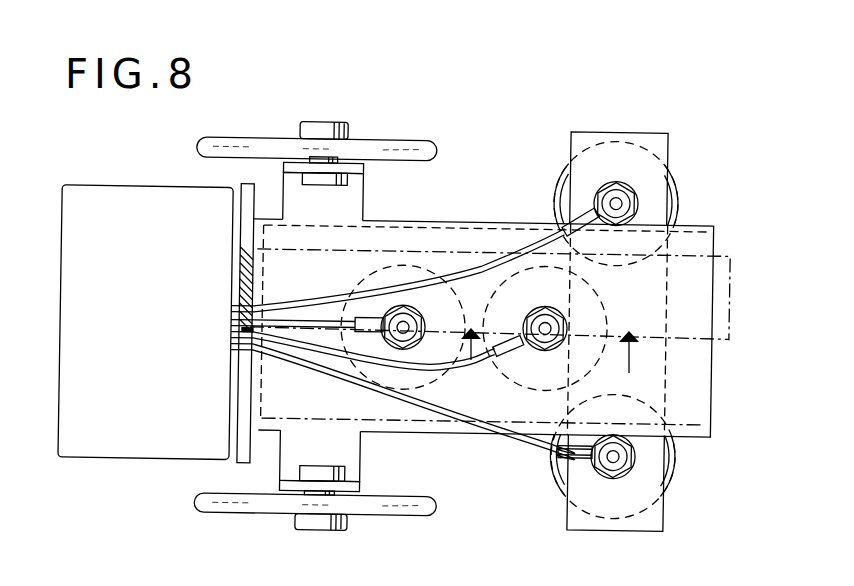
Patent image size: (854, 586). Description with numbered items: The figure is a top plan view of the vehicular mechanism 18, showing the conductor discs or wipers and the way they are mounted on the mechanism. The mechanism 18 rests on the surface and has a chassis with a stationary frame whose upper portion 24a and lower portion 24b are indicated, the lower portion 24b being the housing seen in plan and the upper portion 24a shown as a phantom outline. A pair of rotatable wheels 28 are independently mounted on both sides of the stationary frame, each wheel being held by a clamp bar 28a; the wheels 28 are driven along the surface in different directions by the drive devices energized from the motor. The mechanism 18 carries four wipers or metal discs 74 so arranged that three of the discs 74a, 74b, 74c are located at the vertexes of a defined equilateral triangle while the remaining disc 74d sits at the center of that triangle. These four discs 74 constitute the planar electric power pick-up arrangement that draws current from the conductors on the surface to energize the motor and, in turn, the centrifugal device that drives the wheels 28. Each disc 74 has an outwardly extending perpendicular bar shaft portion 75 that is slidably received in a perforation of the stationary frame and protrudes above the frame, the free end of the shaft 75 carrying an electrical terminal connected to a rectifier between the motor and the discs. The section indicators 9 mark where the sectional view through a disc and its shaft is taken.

The vehicular mechanism 18 is at (138, 486).
The rotatable wheels 28 is at (276, 128).
The clamp bar 28a is at (386, 140).
The upper portion of stationary frame 24a is at (736, 331).
The lower portion of stationary frame 24b is at (700, 427).
The wipers or metal discs 74 is at (553, 176).
The disc 74a is at (672, 202).
The disc 74b is at (398, 260).
The disc 74c is at (674, 478).
The disc 74d is at (522, 374).
The bar shaft portion 75 is at (612, 458).
The section line indicator 9 is at (550, 335).